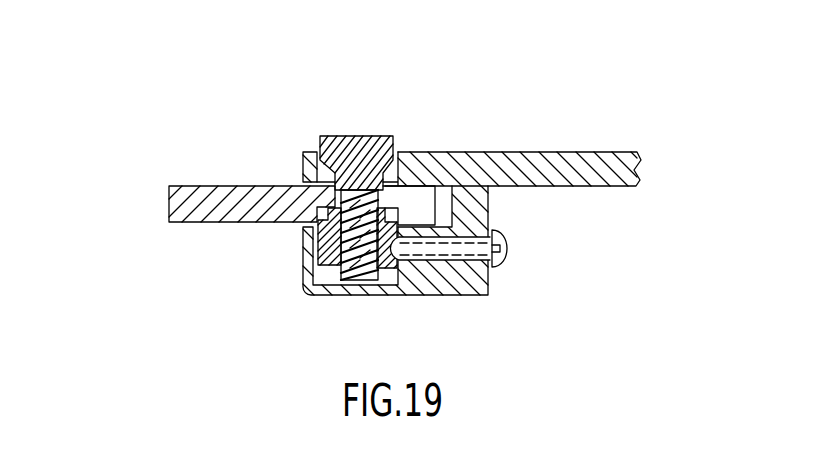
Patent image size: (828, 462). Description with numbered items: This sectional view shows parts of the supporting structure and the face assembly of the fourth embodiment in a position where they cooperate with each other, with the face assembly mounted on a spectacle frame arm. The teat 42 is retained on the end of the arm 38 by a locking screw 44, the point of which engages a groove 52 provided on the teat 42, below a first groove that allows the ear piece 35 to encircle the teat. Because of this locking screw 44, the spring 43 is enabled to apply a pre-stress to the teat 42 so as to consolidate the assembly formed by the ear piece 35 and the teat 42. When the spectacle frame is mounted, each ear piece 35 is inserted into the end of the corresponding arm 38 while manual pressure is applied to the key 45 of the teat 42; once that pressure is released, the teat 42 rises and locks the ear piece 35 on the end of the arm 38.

The ear piece 35 is at (223, 200).
The arm 38 is at (590, 160).
The teat 42 is at (396, 148).
The spring 43 is at (388, 274).
The locking screw 44 is at (499, 233).
The key 45 is at (348, 135).
The groove 52 is at (320, 245).